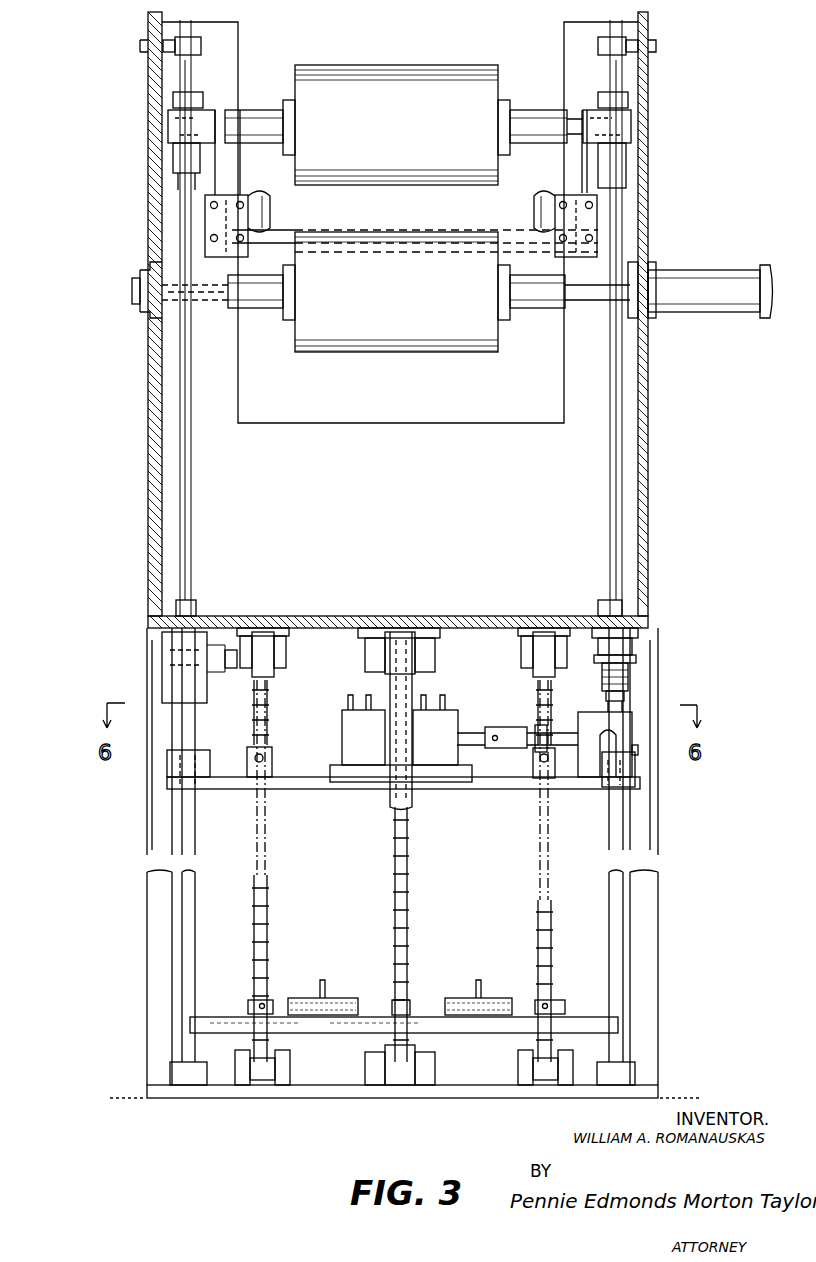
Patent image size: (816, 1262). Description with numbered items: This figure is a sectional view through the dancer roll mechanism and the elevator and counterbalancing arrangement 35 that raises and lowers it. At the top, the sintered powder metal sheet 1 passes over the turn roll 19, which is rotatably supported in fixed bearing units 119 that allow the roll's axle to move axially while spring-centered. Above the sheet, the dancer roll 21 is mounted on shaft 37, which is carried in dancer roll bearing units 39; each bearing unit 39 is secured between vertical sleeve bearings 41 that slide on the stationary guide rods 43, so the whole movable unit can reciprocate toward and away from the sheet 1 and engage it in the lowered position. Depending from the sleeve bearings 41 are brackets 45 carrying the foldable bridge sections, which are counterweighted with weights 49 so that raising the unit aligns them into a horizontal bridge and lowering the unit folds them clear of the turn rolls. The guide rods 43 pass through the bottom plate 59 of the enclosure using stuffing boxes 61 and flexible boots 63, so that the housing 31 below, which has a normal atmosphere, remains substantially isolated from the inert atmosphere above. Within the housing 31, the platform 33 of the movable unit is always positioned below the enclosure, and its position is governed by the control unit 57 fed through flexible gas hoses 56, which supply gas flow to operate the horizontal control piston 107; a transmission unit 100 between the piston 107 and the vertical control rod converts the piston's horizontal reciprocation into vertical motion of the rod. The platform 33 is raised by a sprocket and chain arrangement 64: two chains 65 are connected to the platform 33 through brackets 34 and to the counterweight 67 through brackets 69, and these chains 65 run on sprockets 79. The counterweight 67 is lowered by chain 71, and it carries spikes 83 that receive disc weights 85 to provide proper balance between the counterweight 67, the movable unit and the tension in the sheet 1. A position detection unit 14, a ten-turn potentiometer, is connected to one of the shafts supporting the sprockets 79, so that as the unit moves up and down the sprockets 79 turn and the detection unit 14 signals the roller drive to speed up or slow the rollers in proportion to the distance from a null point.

The sintered powder metal sheet 1 is at (440, 220).
The position detection unit 14 is at (168, 668).
The turn roll 19 is at (415, 300).
The dancer roll 21 is at (400, 78).
The housing 31 is at (655, 805).
The platform 33 is at (485, 790).
The bracket 34 is at (272, 752).
The elevator and counterbalancing arrangement 35 is at (383, 845).
The shaft 37 is at (572, 118).
The dancer roll bearing unit 39 is at (205, 100).
The vertical sleeve bearing 41 is at (170, 125).
The stationary guide rod 43 is at (190, 350).
The bracket 45 is at (218, 170).
The weight 49 is at (272, 210).
The flexible gas hose 56 is at (350, 695).
The control unit 57 is at (343, 718).
The bottom plate 59 is at (412, 614).
The stuffing box 61 is at (172, 615).
The flexible boot 63 is at (620, 675).
The sprocket and chain arrangement 64 is at (283, 839).
The chain 65 is at (268, 896).
The counterweight 67 is at (496, 1036).
The bracket 69 is at (268, 1000).
The chain 71 is at (410, 855).
The sprocket 79 is at (280, 665).
The spike 83 is at (322, 980).
The disc weight 85 is at (345, 992).
The transmission unit 100 is at (587, 710).
The control piston 107 is at (472, 735).
The bearing unit 119 is at (712, 270).